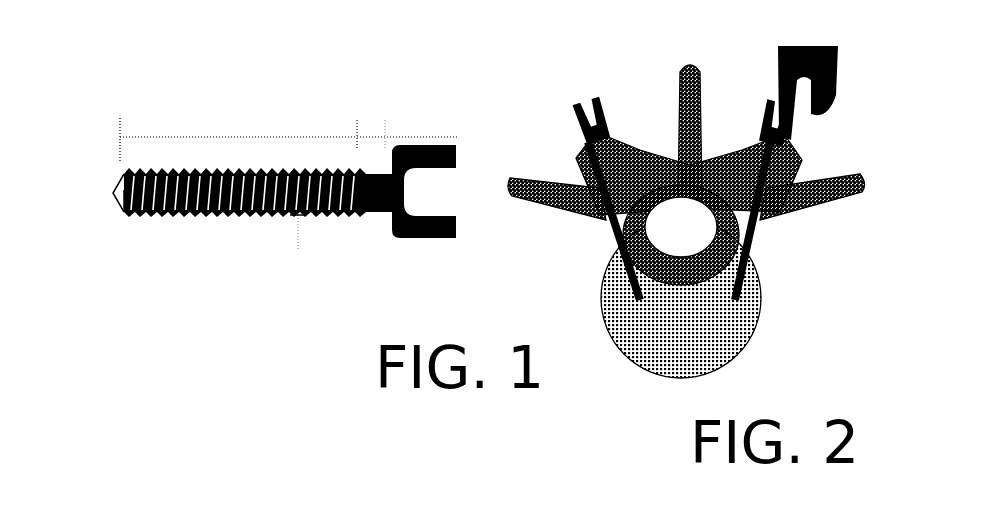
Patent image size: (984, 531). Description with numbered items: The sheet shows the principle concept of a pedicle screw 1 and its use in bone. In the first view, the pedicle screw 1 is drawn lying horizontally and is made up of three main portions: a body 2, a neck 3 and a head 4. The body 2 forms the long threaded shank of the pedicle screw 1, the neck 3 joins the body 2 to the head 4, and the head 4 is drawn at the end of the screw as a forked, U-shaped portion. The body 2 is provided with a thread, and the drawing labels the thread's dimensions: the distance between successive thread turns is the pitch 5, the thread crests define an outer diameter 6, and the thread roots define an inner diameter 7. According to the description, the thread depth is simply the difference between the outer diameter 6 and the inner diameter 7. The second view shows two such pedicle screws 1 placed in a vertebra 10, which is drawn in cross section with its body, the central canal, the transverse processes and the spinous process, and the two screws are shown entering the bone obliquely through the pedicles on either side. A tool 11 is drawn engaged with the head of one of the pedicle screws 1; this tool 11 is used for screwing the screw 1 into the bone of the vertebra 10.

In FIG. 1, the pedicle screw 1 is at (264, 194).
In FIG. 2, the pedicle screw 1 is at (595, 112).
In FIG. 1, the body 2 is at (220, 138).
In FIG. 1, the neck 3 is at (375, 137).
In FIG. 1, the head 4 is at (417, 140).
In FIG. 1, the pitch 5 is at (298, 252).
In FIG. 1, the outer diameter 6 is at (93, 203).
In FIG. 1, the inner diameter 7 is at (112, 193).
In FIG. 2, the vertebra 10 is at (757, 262).
In FIG. 2, the tool 11 is at (837, 72).